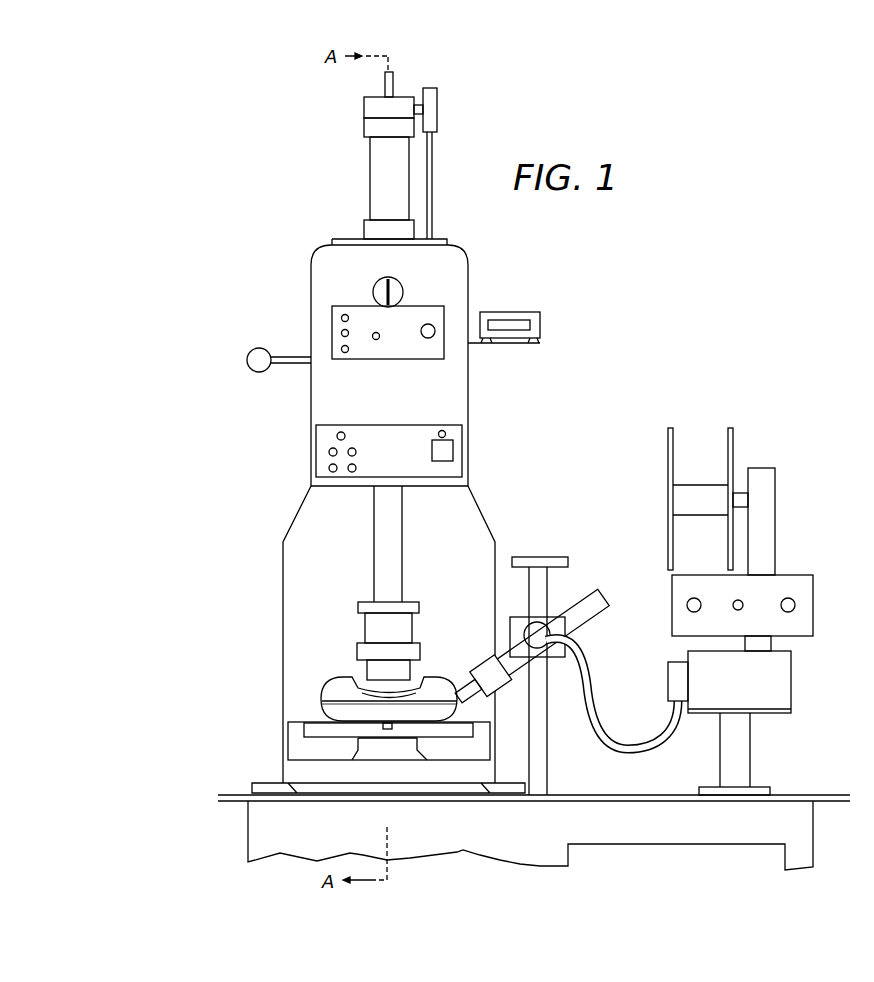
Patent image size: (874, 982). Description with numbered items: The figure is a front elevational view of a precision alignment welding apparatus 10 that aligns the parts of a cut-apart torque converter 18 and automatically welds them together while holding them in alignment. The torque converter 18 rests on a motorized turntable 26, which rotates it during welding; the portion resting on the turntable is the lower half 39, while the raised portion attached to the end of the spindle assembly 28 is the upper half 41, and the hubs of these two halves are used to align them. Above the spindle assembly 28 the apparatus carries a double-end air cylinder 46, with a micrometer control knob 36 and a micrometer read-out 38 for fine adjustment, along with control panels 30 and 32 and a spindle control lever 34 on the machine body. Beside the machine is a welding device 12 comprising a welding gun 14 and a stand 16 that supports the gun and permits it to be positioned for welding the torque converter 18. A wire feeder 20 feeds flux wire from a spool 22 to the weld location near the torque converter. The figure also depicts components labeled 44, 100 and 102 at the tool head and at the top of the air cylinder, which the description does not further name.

The precision alignment welding apparatus 10 is at (292, 433).
The welding device 12 is at (652, 597).
The welding gun 14 is at (478, 697).
The stand 16 is at (547, 758).
The torque converter 18 is at (312, 697).
The wire feeder 20 is at (787, 575).
The spool 22 is at (675, 442).
The motorized turntable 26 is at (315, 740).
The spindle assembly 28 is at (402, 533).
The control panel 30 is at (355, 360).
The control panel 32 is at (398, 425).
The spindle control lever 34 is at (258, 348).
The micrometer control knob 36 is at (396, 287).
The micrometer read-out 38 is at (509, 312).
The lower half 39 is at (322, 712).
The upper half 41 is at (330, 685).
The heating head 44 is at (365, 632).
The double-end air cylinder 46 is at (370, 178).
The position sensor 100 is at (437, 115).
The cylinder head 102 is at (365, 112).